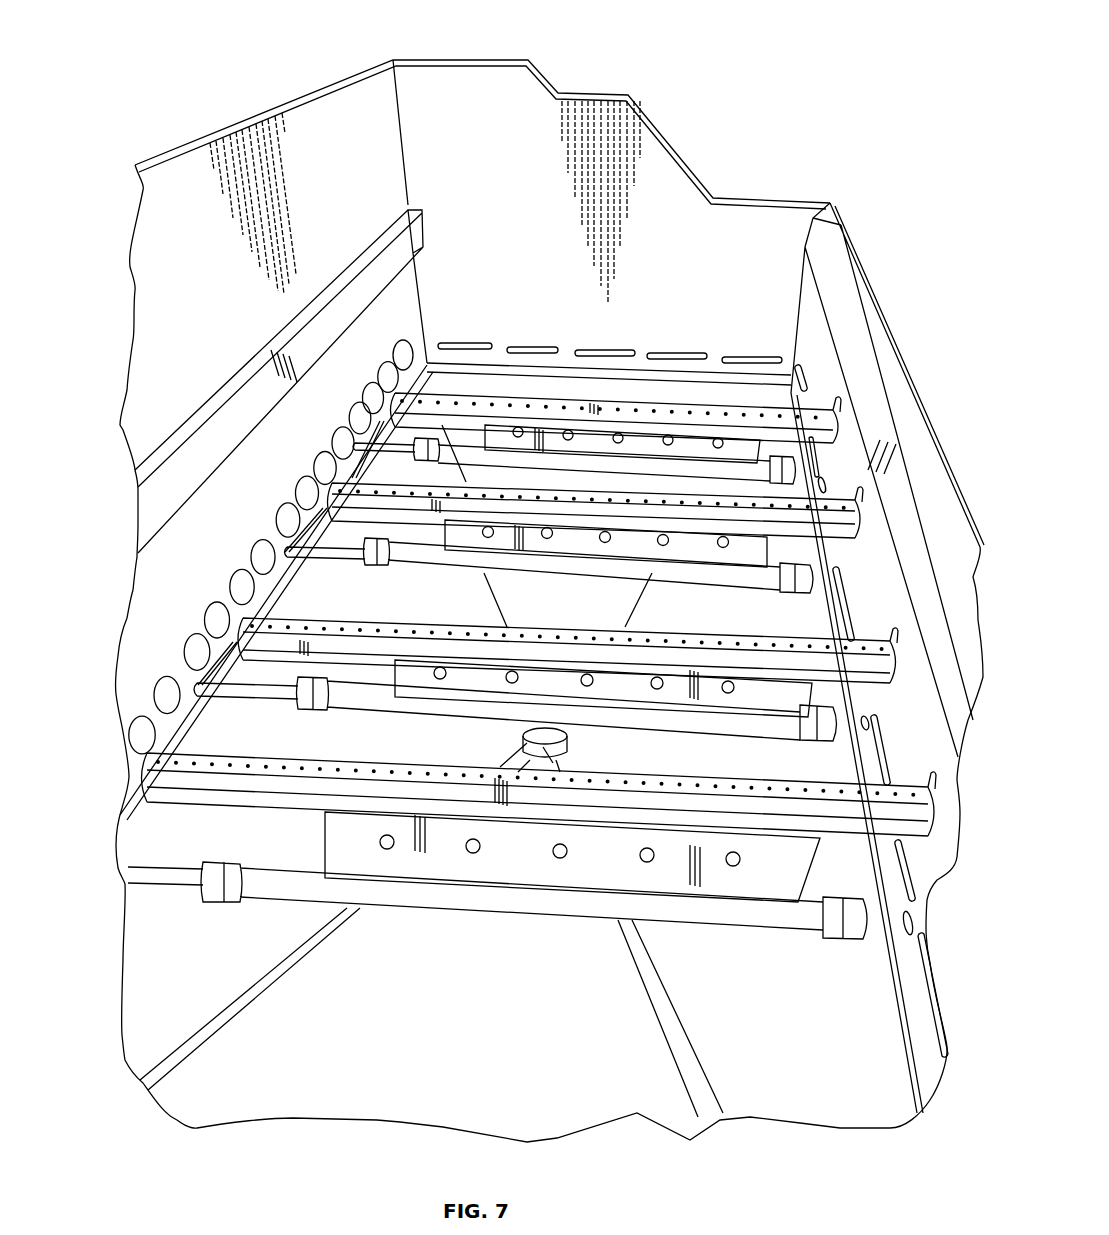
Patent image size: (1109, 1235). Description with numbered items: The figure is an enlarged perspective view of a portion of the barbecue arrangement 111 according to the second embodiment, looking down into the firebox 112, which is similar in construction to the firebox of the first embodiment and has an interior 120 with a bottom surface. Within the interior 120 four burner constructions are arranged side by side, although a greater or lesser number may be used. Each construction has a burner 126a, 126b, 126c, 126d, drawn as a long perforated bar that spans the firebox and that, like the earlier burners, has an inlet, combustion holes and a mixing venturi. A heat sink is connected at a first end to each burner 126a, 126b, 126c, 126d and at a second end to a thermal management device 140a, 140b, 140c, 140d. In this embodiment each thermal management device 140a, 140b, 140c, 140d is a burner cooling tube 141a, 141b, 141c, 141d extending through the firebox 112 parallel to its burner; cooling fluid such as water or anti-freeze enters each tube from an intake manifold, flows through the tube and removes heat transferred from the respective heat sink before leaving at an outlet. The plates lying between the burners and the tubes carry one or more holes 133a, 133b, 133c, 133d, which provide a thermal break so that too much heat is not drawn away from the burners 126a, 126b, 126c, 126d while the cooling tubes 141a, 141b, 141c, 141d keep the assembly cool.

The barbecue arrangement 111 is at (238, 86).
The firebox 112 is at (745, 153).
The interior 120 is at (207, 975).
The burner 126a is at (168, 776).
The burner 126b is at (248, 633).
The burner 126c is at (343, 496).
The burner 126d is at (395, 403).
The holes 133a is at (736, 867).
The holes 133b is at (730, 695).
The holes 133c is at (723, 548).
The holes 133d is at (720, 440).
The thermal management device 140a is at (430, 923).
The thermal management device 140b is at (277, 715).
The thermal management device 140c is at (327, 572).
The thermal management device 140d is at (390, 461).
The burner cooling tube 141a is at (808, 917).
The burner cooling tube 141b is at (800, 700).
The burner cooling tube 141c is at (775, 570).
The burner cooling tube 141d is at (780, 467).